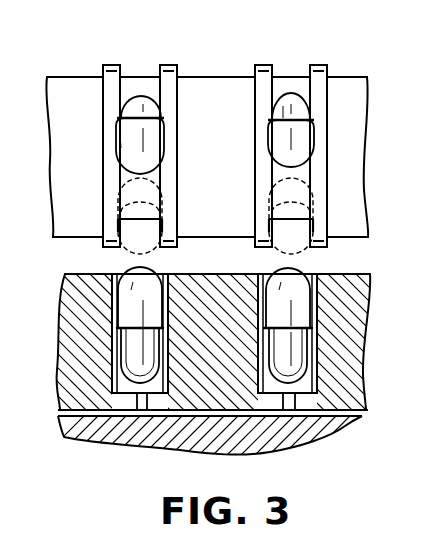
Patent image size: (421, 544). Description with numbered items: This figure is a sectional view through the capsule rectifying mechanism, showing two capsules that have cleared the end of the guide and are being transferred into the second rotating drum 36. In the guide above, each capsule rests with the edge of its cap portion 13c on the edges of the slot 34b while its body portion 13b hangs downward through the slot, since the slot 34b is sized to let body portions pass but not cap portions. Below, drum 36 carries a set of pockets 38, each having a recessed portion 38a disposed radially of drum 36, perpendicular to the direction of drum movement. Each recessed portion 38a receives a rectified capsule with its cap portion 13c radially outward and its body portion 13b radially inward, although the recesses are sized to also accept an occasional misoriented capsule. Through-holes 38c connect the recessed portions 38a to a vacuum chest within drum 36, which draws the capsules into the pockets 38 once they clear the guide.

The slot 34b is at (162, 80).
The second rotating drum 36 is at (193, 275).
The pockets 38 is at (170, 279).
The recessed portion 38a is at (170, 357).
The through-holes 38c is at (151, 397).
The cap portion 13c is at (304, 307).
The body portion 13b is at (300, 368).